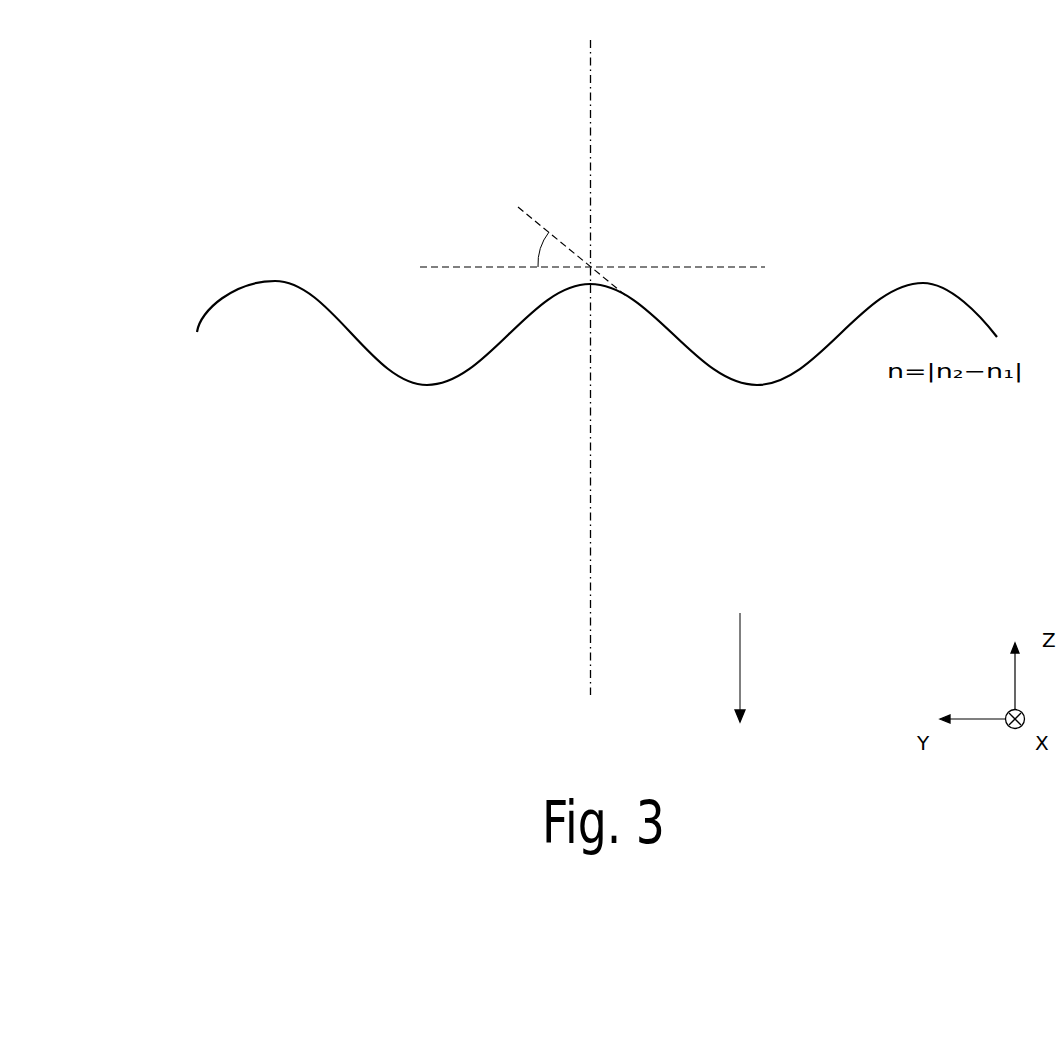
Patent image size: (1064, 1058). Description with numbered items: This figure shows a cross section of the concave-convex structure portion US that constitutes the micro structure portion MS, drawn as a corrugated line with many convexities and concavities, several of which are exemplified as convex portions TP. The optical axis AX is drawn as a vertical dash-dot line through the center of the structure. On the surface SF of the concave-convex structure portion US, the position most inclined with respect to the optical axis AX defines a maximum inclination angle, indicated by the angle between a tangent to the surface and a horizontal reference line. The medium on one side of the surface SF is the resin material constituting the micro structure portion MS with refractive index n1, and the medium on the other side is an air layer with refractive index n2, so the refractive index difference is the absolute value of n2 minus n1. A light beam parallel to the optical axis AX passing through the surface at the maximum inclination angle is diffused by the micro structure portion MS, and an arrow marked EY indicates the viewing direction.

The optical axis AX is at (598, 178).
The micro structure portion MS is at (270, 358).
The concave-convex structure portion US is at (353, 320).
The surface SF is at (393, 377).
The convex portion TP is at (440, 356).
The refractive index of the resin material n1 is at (842, 296).
The refractive index of the air layer n2 is at (842, 354).
The eye / viewing direction EY is at (797, 641).